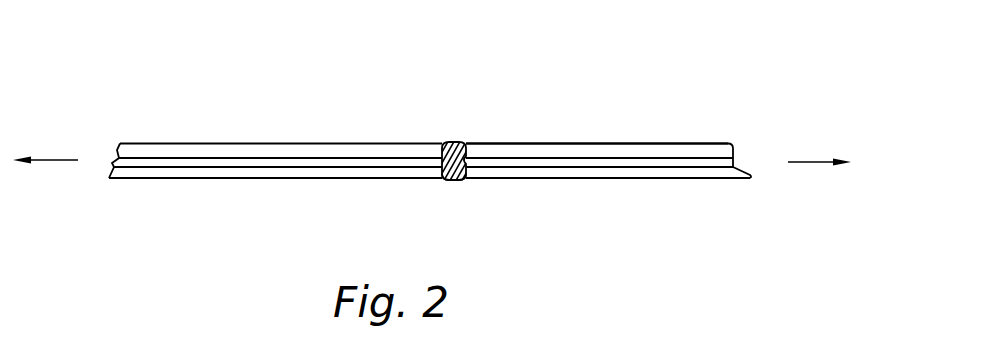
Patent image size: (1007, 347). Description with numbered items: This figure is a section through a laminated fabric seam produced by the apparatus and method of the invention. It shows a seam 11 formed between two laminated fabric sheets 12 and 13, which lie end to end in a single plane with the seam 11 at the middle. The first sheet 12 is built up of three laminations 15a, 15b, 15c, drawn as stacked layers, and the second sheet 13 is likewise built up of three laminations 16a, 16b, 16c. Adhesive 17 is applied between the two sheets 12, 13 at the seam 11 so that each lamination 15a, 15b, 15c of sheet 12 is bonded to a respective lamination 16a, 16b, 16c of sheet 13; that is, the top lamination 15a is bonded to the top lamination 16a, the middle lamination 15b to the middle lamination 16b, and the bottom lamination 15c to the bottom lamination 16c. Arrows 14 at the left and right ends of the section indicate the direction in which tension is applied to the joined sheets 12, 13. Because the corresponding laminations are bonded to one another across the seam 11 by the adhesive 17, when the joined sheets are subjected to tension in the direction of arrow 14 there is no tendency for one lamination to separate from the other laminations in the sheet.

The seam 11 is at (460, 126).
The laminated fabric sheet 12 is at (275, 162).
The laminated fabric sheet 13 is at (616, 164).
The arrow 14 is at (45, 160).
The lamination 15a is at (218, 150).
The lamination 15b is at (315, 162).
The lamination 15c is at (285, 173).
The lamination 16a is at (535, 148).
The lamination 16b is at (655, 165).
The lamination 16c is at (692, 178).
The adhesive 17 is at (455, 178).